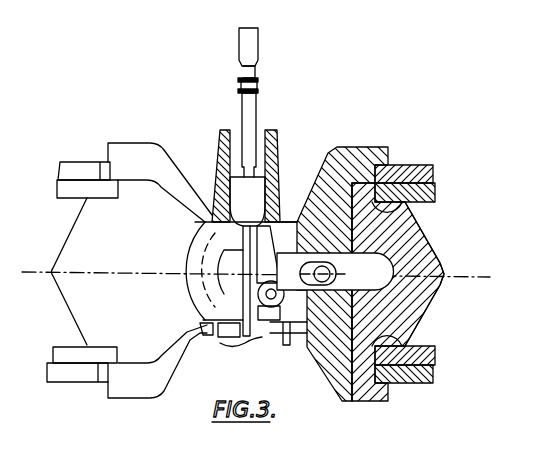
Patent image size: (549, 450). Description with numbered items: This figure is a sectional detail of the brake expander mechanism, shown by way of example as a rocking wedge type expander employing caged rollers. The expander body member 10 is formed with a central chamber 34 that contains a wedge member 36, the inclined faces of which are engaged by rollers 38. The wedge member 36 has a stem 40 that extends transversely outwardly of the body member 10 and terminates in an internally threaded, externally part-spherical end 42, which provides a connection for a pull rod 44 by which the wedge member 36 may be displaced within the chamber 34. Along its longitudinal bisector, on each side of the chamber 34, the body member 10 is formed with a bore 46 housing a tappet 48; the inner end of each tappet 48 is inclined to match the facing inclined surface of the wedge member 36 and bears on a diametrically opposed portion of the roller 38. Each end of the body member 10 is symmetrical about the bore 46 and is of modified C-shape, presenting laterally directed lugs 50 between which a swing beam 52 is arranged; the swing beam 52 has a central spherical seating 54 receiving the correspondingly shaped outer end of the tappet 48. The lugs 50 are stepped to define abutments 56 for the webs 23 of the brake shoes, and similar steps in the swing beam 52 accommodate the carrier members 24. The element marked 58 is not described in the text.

The expander body member 10 is at (220, 152).
The webs 23 is at (403, 167).
The carrier members 24 is at (436, 192).
The central chamber 34 is at (285, 322).
The wedge member 36 is at (196, 351).
The rollers 38 is at (262, 322).
The stem 40 is at (245, 258).
The part-spherical end 42 is at (237, 197).
The pull rod 44 is at (247, 104).
The bore 46 is at (293, 222).
The tappet 48 is at (333, 150).
The lugs 50 is at (360, 148).
The swing beam 52 is at (445, 278).
The spherical seating 54 is at (385, 266).
The abutments 56 is at (346, 148).
The bolt head boss 58 is at (405, 213).